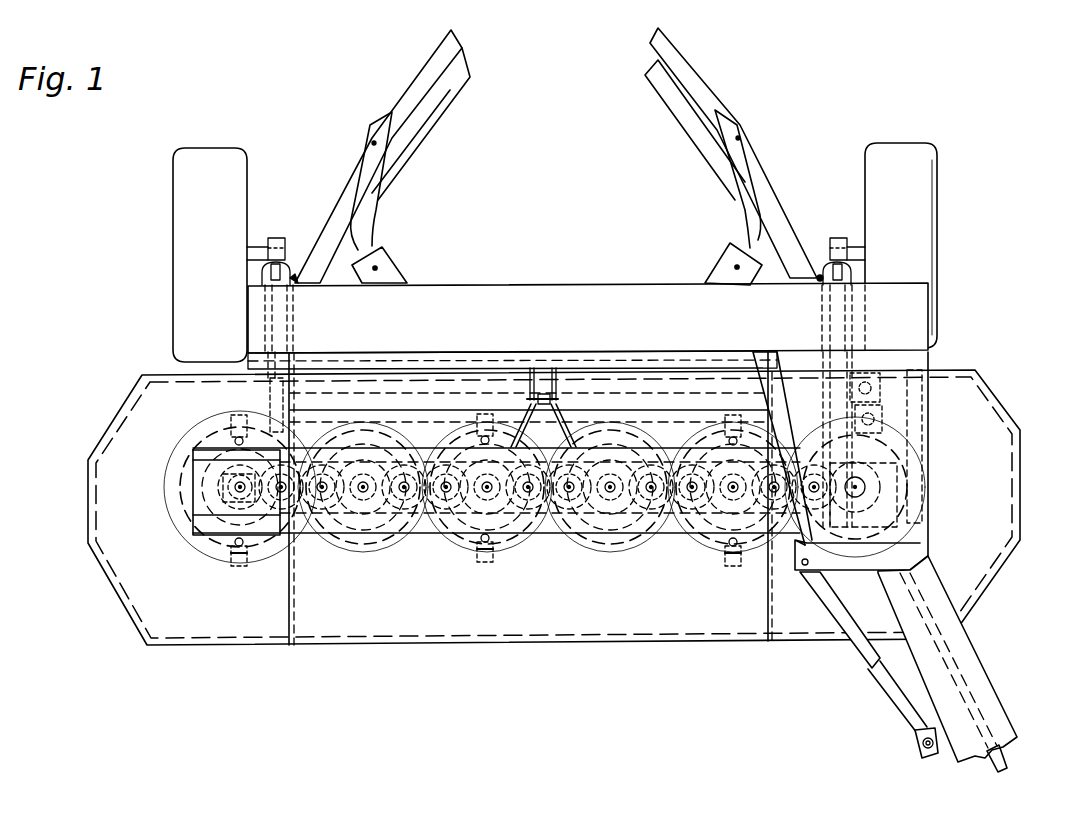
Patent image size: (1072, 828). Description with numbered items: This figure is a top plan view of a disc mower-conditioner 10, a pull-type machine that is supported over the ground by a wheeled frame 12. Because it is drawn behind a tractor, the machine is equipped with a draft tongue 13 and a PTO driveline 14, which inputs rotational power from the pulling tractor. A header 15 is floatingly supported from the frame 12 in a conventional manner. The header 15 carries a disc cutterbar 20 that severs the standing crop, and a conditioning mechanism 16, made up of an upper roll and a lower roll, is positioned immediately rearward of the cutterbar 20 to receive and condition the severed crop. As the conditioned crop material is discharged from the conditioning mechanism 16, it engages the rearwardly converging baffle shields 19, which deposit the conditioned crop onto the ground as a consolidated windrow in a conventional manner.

The disc mower-conditioner 10 is at (978, 300).
The wheeled frame 12 is at (450, 297).
The draft tongue 13 is at (970, 653).
The PTO driveline 14 is at (1005, 762).
The header 15 is at (1012, 402).
The conditioning mechanism 16 is at (870, 370).
The baffle shields 19 is at (440, 112).
The disc cutterbar 20 is at (441, 565).